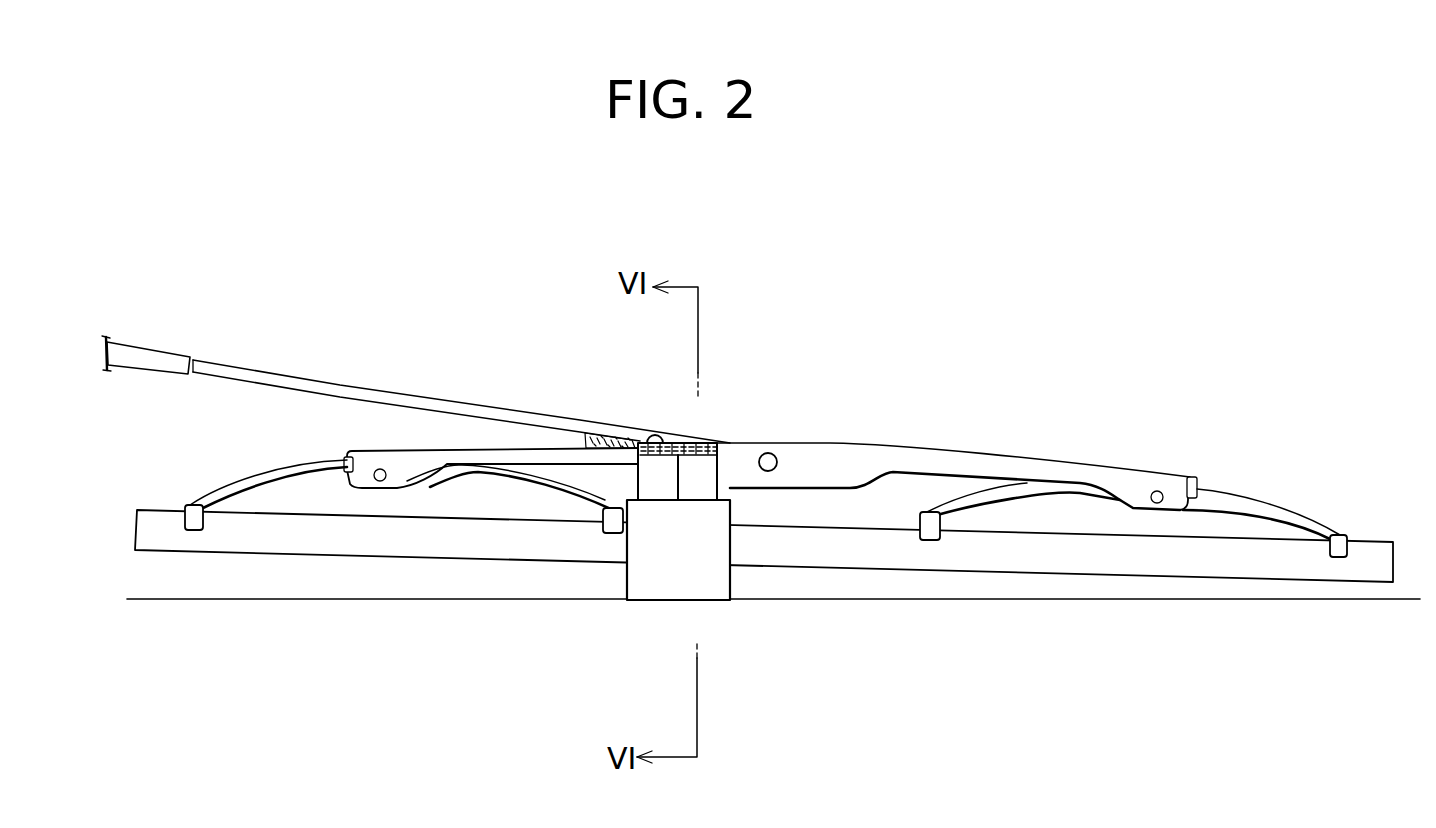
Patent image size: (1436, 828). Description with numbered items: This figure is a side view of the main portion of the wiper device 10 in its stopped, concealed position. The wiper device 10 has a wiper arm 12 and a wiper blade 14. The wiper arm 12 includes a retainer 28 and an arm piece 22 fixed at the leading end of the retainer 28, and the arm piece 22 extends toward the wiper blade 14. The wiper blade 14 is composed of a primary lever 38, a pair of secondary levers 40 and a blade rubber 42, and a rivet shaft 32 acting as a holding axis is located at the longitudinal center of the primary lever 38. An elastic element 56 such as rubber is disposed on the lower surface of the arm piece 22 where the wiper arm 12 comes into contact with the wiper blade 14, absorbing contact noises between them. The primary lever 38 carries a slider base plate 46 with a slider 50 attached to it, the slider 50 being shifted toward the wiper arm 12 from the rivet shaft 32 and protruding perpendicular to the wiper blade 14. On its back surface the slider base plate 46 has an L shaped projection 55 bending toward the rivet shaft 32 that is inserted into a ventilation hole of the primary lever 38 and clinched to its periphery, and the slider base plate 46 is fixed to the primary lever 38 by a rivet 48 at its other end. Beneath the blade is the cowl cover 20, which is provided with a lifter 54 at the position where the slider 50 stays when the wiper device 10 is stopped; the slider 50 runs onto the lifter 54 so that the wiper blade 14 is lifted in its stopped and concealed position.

The wiper device 10 is at (794, 313).
The wiper arm 12 is at (380, 370).
The wiper blade 14 is at (1135, 450).
The cowl cover 20 is at (327, 601).
The arm piece 22 is at (462, 401).
The retainer 28 is at (183, 360).
The rivet shaft 32 is at (775, 456).
The primary lever 38 is at (1048, 470).
The secondary lever 40 is at (272, 483).
The blade rubber 42 is at (1362, 560).
The slider base plate 46 is at (671, 443).
The rivet 48 is at (652, 436).
The slider 50 is at (700, 477).
The lifter 54 is at (680, 587).
The L shaped projection 55 is at (728, 441).
The elastic element 56 is at (610, 442).